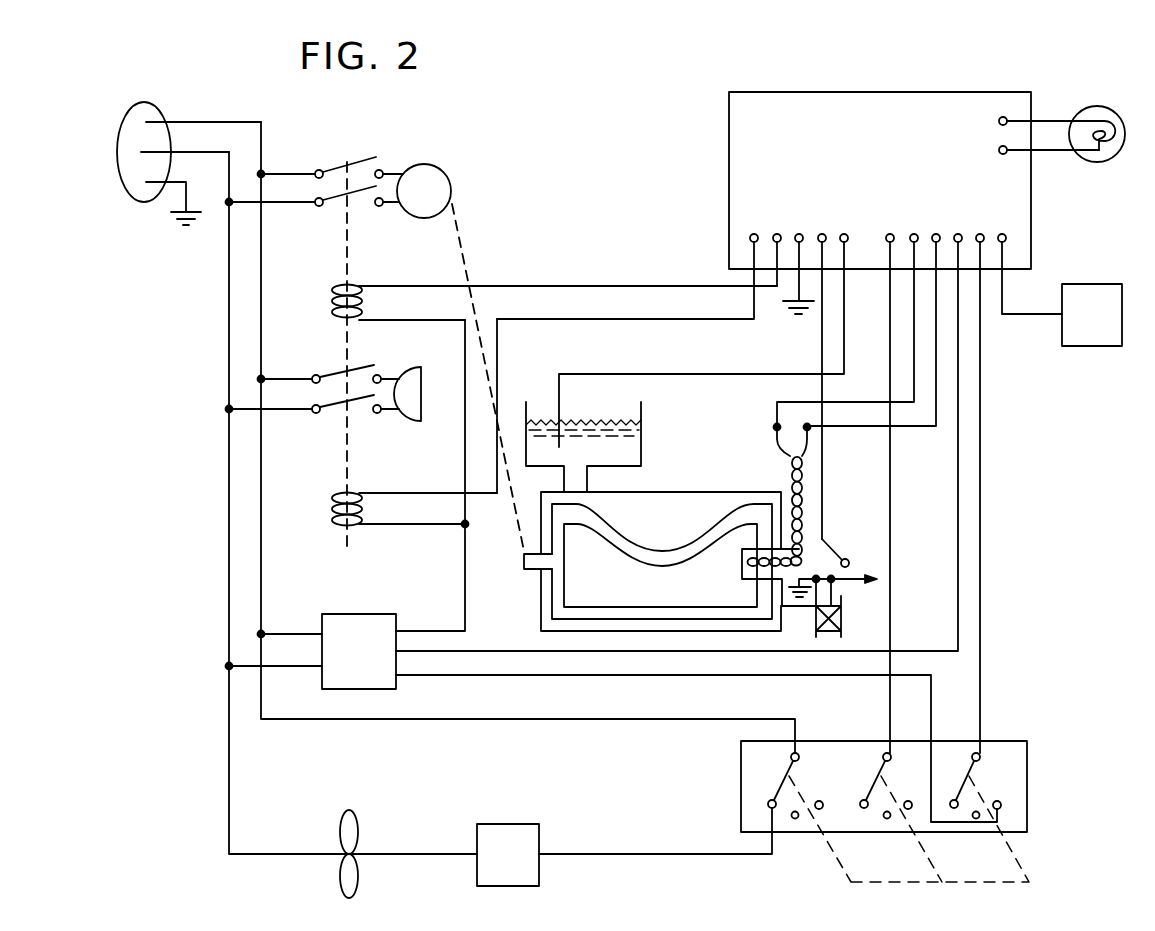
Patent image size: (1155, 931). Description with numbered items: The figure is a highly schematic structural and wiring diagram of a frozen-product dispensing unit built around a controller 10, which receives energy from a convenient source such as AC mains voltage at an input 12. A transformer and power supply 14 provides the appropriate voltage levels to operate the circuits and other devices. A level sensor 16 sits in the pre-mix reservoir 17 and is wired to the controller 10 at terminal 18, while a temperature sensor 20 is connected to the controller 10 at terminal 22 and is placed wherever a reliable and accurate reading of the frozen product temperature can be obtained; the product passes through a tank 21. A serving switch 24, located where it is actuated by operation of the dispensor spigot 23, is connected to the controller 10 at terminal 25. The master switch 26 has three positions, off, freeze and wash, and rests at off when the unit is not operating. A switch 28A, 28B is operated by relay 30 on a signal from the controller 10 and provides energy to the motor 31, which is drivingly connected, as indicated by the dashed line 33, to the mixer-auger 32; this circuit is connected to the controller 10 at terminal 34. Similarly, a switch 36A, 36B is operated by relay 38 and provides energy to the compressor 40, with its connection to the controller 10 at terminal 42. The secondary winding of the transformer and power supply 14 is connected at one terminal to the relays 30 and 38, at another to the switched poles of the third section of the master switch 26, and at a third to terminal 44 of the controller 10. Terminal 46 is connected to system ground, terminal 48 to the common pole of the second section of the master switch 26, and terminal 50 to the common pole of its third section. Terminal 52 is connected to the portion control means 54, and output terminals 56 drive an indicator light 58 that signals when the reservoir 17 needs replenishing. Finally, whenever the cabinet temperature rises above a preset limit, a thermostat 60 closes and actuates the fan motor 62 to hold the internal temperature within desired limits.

The controller 10 is at (795, 148).
The input 12 is at (158, 105).
The transformer and power supply 14 is at (358, 614).
The level sensor 16 is at (560, 443).
The pre-mix reservoir 17 is at (643, 447).
The terminal 18 is at (845, 235).
The temperature sensor 20 is at (743, 562).
The tank 21 is at (658, 492).
The terminal 22 is at (937, 235).
The dispensor spigot 23 is at (843, 617).
The serving switch 24 is at (855, 573).
The terminal 25 is at (823, 235).
The master switch 26 is at (1028, 786).
The switch 28A is at (340, 167).
The switch 28B is at (340, 207).
The relay 30 is at (333, 302).
The motor 31 is at (437, 165).
The mixer-auger 32 is at (727, 517).
The dashed line 33 is at (467, 253).
The terminal 34 is at (777, 235).
The switch 36A is at (343, 377).
The switch 36B is at (343, 413).
The relay 38 is at (333, 508).
The compressor 40 is at (425, 380).
The terminal 42 is at (755, 235).
The terminal 44 is at (959, 235).
The terminal 46 is at (800, 235).
The terminal 48 is at (891, 235).
The terminal 50 is at (981, 235).
The terminal 52 is at (1003, 235).
The portion control means 54 is at (1085, 285).
The output terminals 56 is at (1000, 151).
The indicator light 58 is at (1112, 162).
The thermostat 60 is at (507, 825).
The fan motor 62 is at (358, 830).